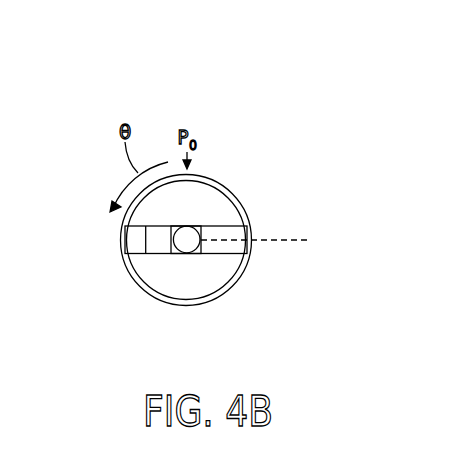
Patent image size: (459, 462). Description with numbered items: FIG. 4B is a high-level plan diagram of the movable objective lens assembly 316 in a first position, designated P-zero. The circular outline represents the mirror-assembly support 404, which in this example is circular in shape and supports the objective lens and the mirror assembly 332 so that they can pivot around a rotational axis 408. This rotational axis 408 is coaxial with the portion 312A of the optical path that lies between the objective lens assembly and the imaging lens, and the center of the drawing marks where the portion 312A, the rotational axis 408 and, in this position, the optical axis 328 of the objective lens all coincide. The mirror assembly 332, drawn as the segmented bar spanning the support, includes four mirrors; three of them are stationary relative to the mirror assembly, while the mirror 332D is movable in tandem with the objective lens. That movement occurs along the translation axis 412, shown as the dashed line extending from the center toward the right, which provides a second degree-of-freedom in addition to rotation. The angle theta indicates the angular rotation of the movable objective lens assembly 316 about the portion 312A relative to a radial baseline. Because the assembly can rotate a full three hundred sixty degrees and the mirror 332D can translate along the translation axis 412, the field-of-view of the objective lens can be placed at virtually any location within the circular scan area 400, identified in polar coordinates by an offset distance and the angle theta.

The mirror-assembly support 404 is at (206, 174).
The scan area 400 is at (206, 230).
The movable objective lens assembly 316 is at (262, 232).
The mirror assembly 332 is at (189, 217).
The mirror 332D is at (197, 225).
The portion of optical path 312A is at (225, 290).
The optical axis 328 is at (225, 290).
The rotational axis 408 is at (187, 240).
The translation axis 412 is at (300, 242).